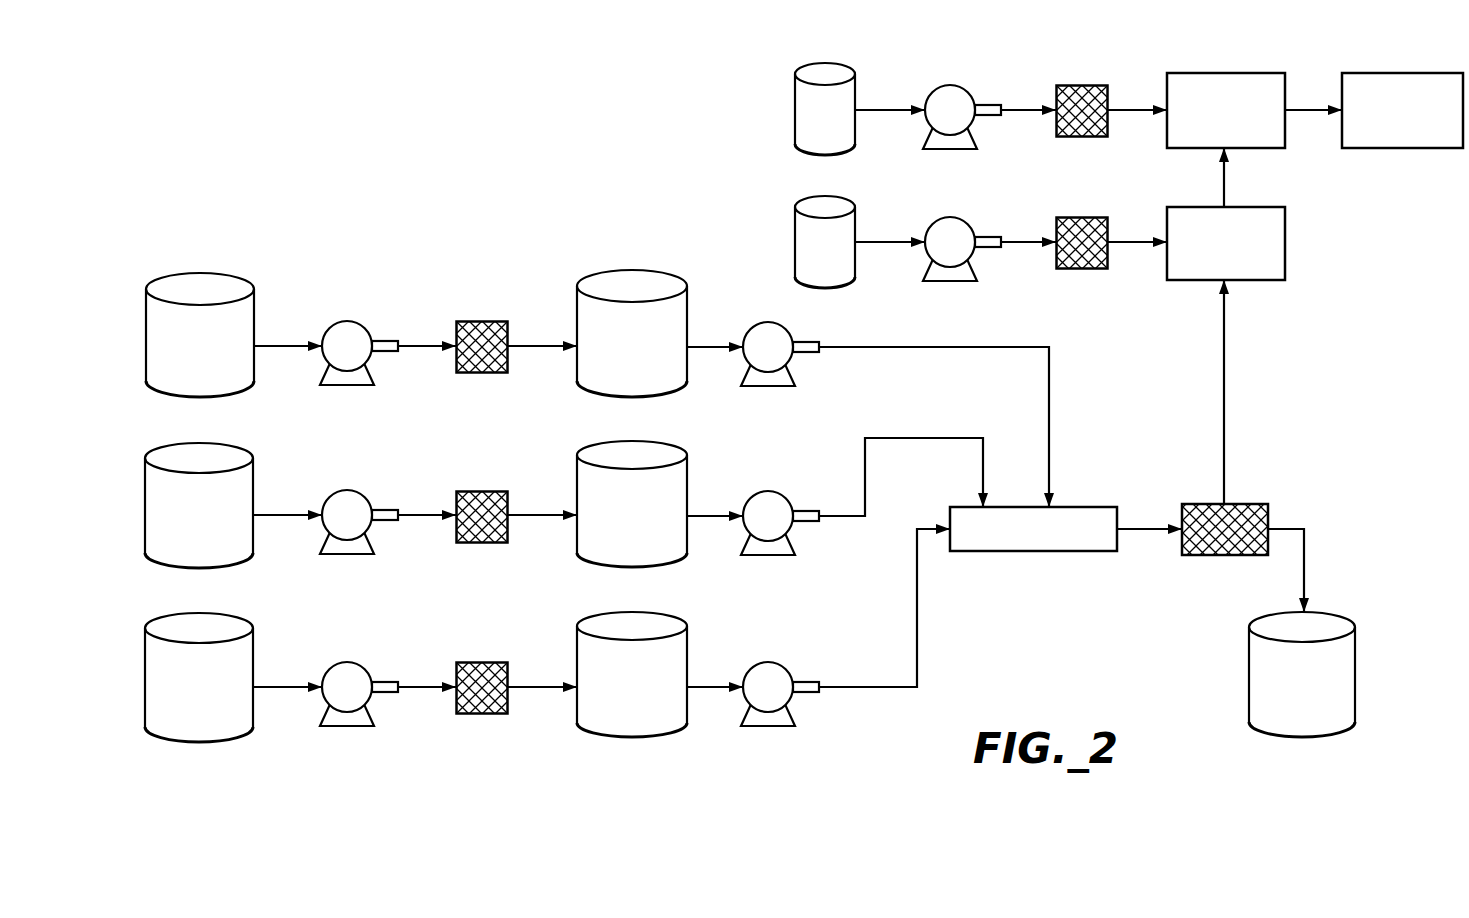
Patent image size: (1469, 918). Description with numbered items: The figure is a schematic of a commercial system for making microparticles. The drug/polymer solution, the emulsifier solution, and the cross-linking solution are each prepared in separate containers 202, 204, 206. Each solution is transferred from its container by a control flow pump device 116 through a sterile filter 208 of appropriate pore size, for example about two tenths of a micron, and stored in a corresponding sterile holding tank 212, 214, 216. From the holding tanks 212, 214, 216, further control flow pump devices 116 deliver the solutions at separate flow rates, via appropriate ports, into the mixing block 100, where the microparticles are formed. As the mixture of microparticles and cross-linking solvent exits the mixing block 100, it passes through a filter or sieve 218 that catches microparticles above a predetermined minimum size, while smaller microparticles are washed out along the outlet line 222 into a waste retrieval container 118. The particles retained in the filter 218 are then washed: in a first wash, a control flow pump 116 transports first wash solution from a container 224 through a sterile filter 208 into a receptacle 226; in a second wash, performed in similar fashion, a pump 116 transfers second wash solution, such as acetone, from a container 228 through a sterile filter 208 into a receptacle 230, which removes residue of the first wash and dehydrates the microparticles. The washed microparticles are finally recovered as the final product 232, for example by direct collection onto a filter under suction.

The mixing block 100 is at (1088, 507).
The control flow pump device 116 is at (348, 318).
The waste retrieval container 118 is at (1260, 695).
The container 202 is at (221, 634).
The container 204 is at (221, 463).
The container 206 is at (221, 292).
The sterile filter 208 is at (491, 321).
The sterile holding tank 212 is at (674, 613).
The sterile holding tank 214 is at (674, 442).
The sterile holding tank 216 is at (674, 272).
The filter or sieve 218 is at (1250, 504).
The outlet conduit 222 is at (1300, 572).
The container 224 is at (812, 239).
The receptacle 226 is at (1266, 207).
The container 228 is at (808, 106).
The receptacle 230 is at (1259, 73).
The microparticle recovery 232 is at (1394, 73).